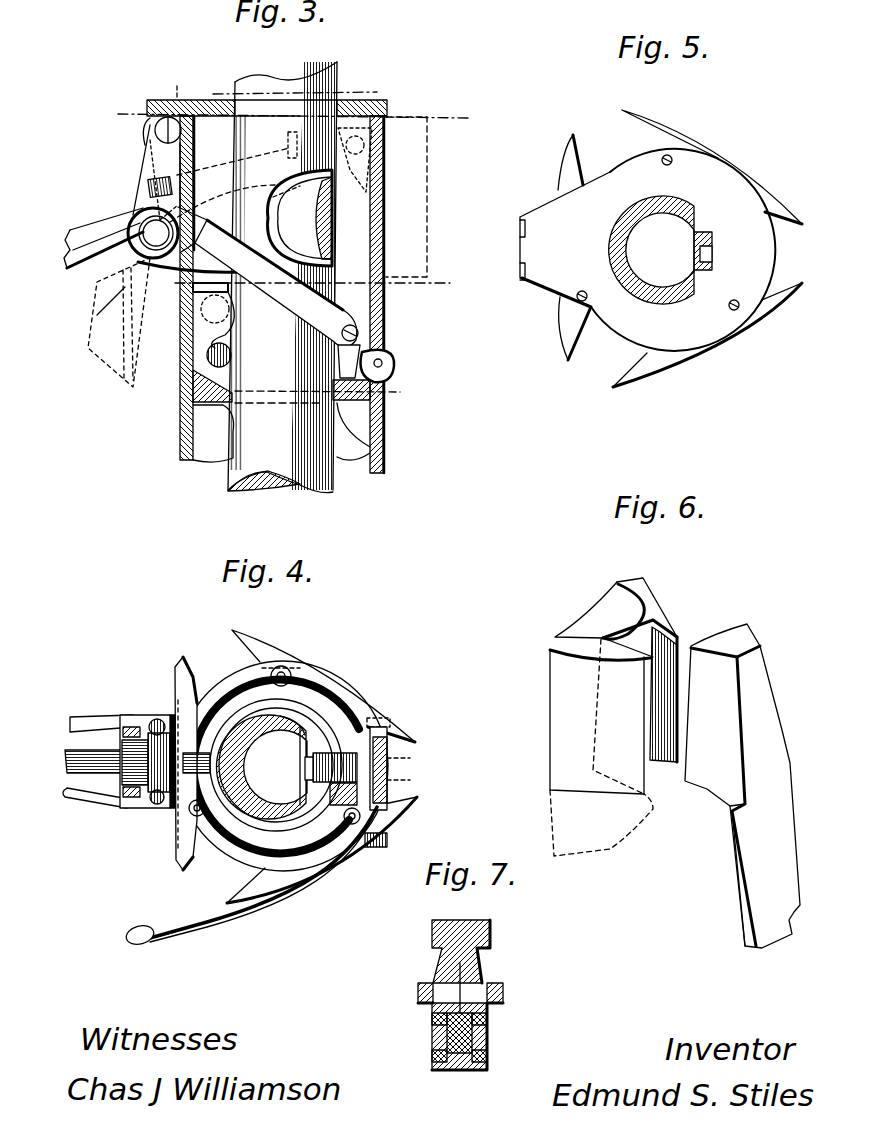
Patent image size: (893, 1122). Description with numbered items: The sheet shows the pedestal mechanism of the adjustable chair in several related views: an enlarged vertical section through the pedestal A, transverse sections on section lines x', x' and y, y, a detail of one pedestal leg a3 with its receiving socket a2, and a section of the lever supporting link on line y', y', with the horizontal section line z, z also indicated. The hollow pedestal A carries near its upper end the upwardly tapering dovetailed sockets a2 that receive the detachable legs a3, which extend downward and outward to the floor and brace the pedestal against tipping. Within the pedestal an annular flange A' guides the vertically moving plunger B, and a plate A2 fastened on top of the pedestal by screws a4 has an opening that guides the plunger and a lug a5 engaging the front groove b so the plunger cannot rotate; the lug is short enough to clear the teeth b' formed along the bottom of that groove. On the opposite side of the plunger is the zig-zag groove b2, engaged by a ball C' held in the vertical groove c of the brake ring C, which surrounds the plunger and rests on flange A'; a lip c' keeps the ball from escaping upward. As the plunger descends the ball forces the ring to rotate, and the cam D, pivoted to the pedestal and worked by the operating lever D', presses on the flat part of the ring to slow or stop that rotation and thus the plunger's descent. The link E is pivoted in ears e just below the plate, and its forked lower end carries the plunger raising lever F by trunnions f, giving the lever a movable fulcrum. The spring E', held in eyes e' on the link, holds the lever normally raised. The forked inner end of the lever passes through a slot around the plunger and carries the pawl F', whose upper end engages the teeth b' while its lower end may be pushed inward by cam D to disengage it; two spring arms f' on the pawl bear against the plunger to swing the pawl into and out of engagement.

In FIG. 6, the pedestal A is at (613, 718).
In FIG. 4, the pedestal A is at (284, 763).
In FIG. 3, the annular flange A' is at (206, 390).
In FIG. 5, the plate A2 is at (647, 250).
In FIG. 5, the sockets a2 is at (680, 248).
In FIG. 6, the sockets a2 is at (666, 638).
In FIG. 4, the sockets a2 is at (423, 790).
In FIG. 6, the detachable legs a3 is at (797, 856).
In FIG. 5, the screws a4 is at (667, 165).
In FIG. 4, the screws a4 is at (283, 672).
In FIG. 5, the lug a5 is at (707, 253).
In FIG. 3, the plunger B is at (296, 467).
In FIG. 5, the plunger B is at (643, 297).
In FIG. 4, the plunger B is at (273, 815).
In FIG. 3, the longitudinal vertical groove b is at (358, 218).
In FIG. 5, the longitudinal vertical groove b is at (712, 237).
In FIG. 3, the teeth b' is at (385, 218).
In FIG. 3, the groove b2 is at (253, 437).
In FIG. 3, the ring C is at (379, 420).
In FIG. 3, the ball C' is at (188, 386).
In FIG. 3, the vertical groove c is at (186, 354).
In FIG. 3, the lip c' is at (189, 309).
In FIG. 3, the cam D is at (395, 361).
In FIG. 4, the cam D is at (397, 768).
In FIG. 4, the operating lever D' is at (250, 882).
In FIG. 3, the link E is at (146, 172).
In FIG. 4, the link E is at (144, 788).
In FIG. 7, the link E is at (471, 966).
In FIG. 3, the spring E' is at (197, 218).
In FIG. 4, the spring E' is at (141, 762).
In FIG. 3, the ears e is at (147, 131).
In FIG. 4, the ears e is at (126, 785).
In FIG. 3, the eyes e' is at (142, 186).
In FIG. 4, the eyes e' is at (139, 757).
In FIG. 7, the eyes e' is at (467, 986).
In FIG. 3, the plunger raising lever F is at (152, 289).
In FIG. 4, the plunger raising lever F is at (97, 749).
In FIG. 7, the plunger raising lever F is at (459, 1052).
In FIG. 3, the pawl F' is at (393, 294).
In FIG. 4, the pawl F' is at (305, 779).
In FIG. 3, the trunnions f is at (105, 307).
In FIG. 7, the trunnions f is at (455, 1037).
In FIG. 3, the spring arms f' is at (277, 299).
In FIG. 4, the spring arms f' is at (317, 773).
In FIG. 3, the section line x' is at (288, 114).
In FIG. 3, the section line y is at (292, 93).
In FIG. 3, the section line y' is at (177, 82).
In FIG. 3, the section line z is at (310, 281).